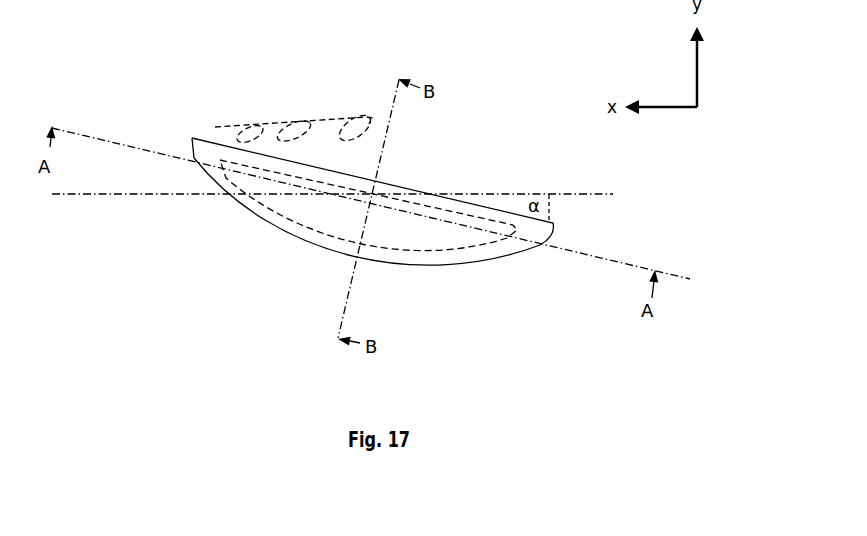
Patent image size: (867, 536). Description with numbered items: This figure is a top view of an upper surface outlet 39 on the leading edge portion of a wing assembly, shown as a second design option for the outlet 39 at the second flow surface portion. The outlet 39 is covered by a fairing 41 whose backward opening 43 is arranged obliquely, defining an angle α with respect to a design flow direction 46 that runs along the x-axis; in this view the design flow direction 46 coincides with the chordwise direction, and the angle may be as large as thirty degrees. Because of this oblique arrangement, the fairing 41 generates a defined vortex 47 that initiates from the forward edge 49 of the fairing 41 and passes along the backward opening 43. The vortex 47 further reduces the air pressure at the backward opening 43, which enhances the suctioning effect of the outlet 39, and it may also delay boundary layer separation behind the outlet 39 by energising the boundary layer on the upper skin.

The outlet 39 is at (357, 224).
The fairing 41 is at (279, 228).
The backward opening 43 is at (353, 182).
The design flow direction 46 is at (72, 195).
The vortex 47 is at (331, 113).
The forward edge 49 is at (201, 137).